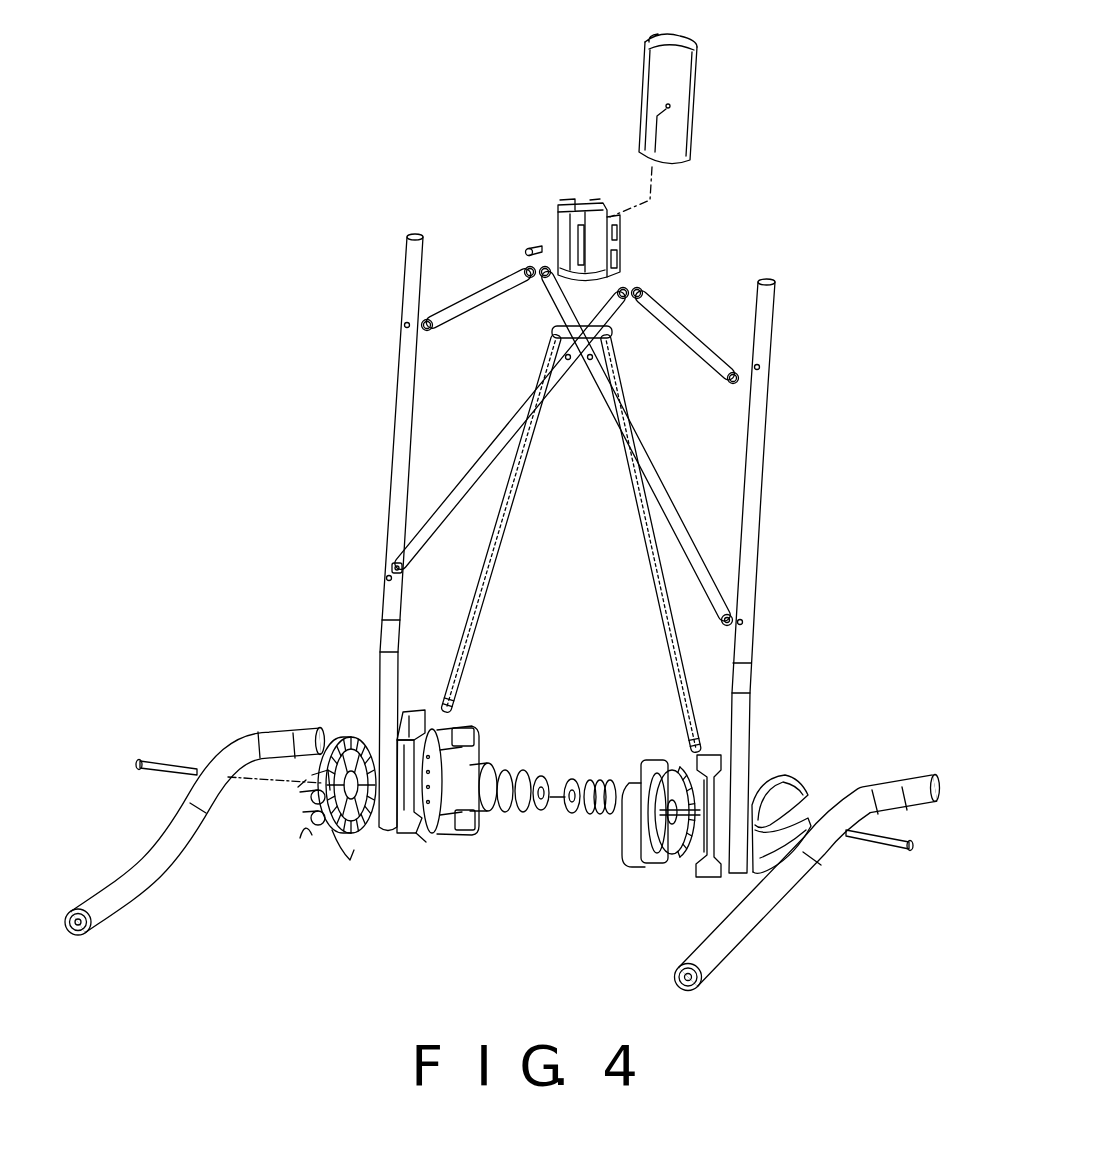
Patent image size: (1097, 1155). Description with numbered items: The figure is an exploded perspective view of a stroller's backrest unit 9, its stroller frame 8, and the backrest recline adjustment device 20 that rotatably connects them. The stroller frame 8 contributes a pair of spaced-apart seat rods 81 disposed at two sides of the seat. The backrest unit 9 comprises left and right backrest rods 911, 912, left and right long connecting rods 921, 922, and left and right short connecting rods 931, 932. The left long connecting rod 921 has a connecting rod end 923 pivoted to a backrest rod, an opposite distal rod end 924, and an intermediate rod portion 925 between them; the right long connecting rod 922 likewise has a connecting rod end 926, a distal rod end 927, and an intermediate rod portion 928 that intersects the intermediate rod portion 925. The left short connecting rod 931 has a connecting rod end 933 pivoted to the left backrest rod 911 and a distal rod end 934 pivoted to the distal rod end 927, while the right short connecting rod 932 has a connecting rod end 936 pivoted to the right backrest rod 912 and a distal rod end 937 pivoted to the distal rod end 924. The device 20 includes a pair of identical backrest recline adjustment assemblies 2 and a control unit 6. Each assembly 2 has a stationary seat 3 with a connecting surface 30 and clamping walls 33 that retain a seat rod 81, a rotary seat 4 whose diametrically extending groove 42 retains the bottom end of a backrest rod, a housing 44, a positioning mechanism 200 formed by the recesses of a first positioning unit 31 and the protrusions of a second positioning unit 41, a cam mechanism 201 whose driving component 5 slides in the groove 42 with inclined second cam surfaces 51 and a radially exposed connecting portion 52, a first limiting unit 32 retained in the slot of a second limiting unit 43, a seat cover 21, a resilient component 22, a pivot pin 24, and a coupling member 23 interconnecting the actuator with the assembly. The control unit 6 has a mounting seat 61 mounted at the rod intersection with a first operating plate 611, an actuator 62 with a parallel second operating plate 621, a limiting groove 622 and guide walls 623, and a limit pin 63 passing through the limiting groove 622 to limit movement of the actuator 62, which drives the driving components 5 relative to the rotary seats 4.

The backrest recline adjustment assembly 2 is at (372, 871).
The backrest recline adjustment device 20 is at (416, 907).
The positioning mechanism 200 is at (345, 715).
The cam mechanism 201 is at (432, 852).
The seat cover 21 is at (543, 780).
The resilient component 22 is at (507, 767).
The coupling member 23 is at (489, 555).
The pivot pin 24 is at (162, 765).
The stationary seat 3 is at (298, 845).
The connecting surface 30 is at (327, 835).
The first positioning unit 31 is at (350, 840).
The first limiting unit 32 is at (358, 707).
The clamping walls 33 is at (308, 820).
The rotary seat 4 is at (469, 709).
The second positioning unit 41 is at (647, 863).
The groove 42 is at (660, 768).
The second limiting unit 43 is at (692, 770).
The housing 44 is at (487, 800).
The driving component 5 is at (408, 851).
The second cam surfaces 51 is at (415, 715).
The connecting portion 52 is at (403, 710).
The control unit 6 is at (751, 124).
The mounting seat 61 is at (656, 100).
The first operating plate 611 is at (640, 48).
The actuator 62 is at (555, 223).
The second operating plate 621 is at (565, 213).
The limiting groove 622 is at (592, 270).
The guide walls 623 is at (617, 250).
The limit pin 63 is at (524, 247).
The stroller frame 8 is at (239, 714).
The seat rods 81 is at (105, 913).
The backrest unit 9 is at (806, 326).
The left backrest rod 911 is at (398, 458).
The right backrest rod 912 is at (753, 470).
The left long connecting rod 921 is at (460, 490).
The right long connecting rod 922 is at (676, 520).
The connecting rod end 923 is at (403, 572).
The distal rod end 924 is at (626, 300).
The intermediate rod portion 925 is at (557, 378).
The connecting rod end 926 is at (727, 612).
The distal rod end 927 is at (537, 282).
The intermediate rod portion 928 is at (607, 380).
The left short connecting rod 931 is at (463, 306).
The right short connecting rod 932 is at (688, 332).
The connecting rod end 933 is at (433, 250).
The distal rod end 934 is at (527, 266).
The connecting rod end 936 is at (737, 352).
The distal rod end 937 is at (640, 292).